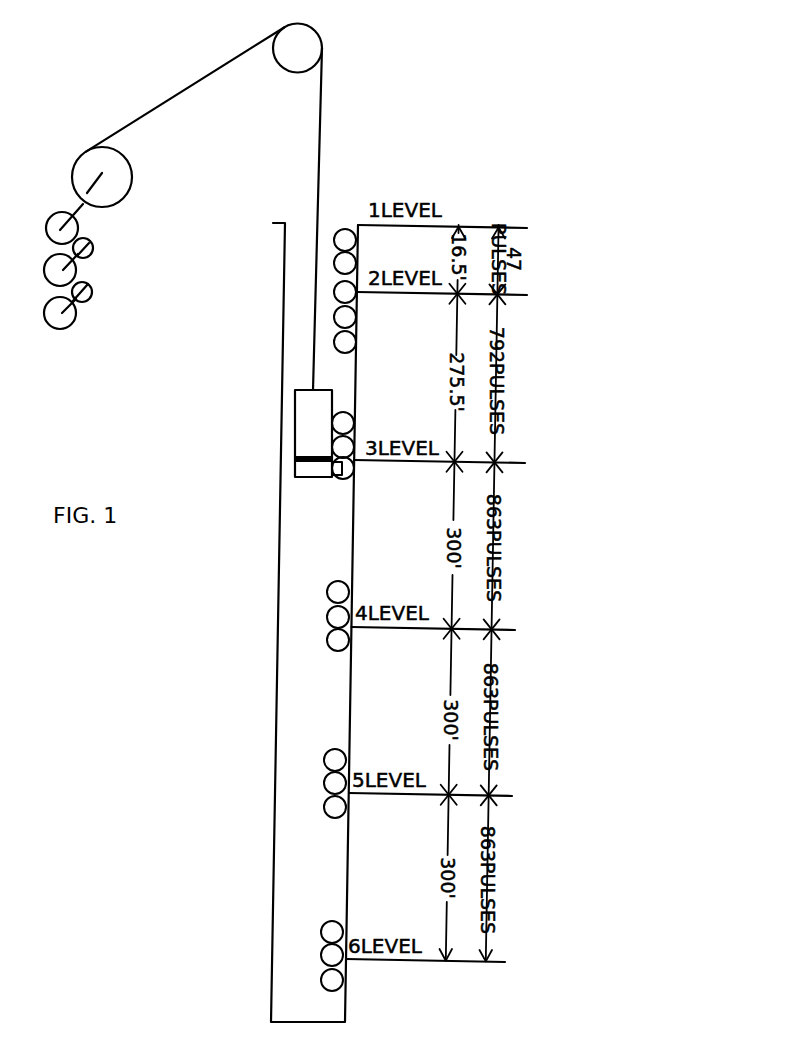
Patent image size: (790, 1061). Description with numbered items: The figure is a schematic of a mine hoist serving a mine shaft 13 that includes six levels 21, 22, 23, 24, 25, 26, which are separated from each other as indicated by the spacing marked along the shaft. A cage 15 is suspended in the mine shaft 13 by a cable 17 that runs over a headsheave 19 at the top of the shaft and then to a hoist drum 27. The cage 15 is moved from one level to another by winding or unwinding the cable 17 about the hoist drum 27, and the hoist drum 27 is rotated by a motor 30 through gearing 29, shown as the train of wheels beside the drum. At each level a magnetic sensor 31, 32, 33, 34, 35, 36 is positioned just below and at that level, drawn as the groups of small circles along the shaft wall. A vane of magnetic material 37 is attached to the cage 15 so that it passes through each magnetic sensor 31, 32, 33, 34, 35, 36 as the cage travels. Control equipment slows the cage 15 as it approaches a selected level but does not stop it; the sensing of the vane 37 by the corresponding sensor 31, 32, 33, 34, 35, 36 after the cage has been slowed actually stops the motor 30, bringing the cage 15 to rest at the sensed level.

The mine shaft 13 is at (314, 574).
The cage 15 is at (330, 390).
The cable 17 is at (318, 170).
The headsheave 19 is at (322, 41).
The first level 21 is at (384, 229).
The second level 22 is at (384, 296).
The third level 23 is at (369, 463).
The fourth level 24 is at (362, 630).
The fifth level 25 is at (359, 796).
The sixth level 26 is at (356, 962).
The hoist drum 27 is at (132, 169).
The gearing 29 is at (98, 220).
The motor 30 is at (78, 317).
The magnetic sensor 31 is at (345, 226).
The magnetic sensor 32 is at (344, 294).
The magnetic sensor 33 is at (343, 480).
The magnetic sensor 34 is at (336, 652).
The magnetic sensor 35 is at (333, 818).
The magnetic sensor 36 is at (321, 980).
The vane of magnetic material 37 is at (337, 477).